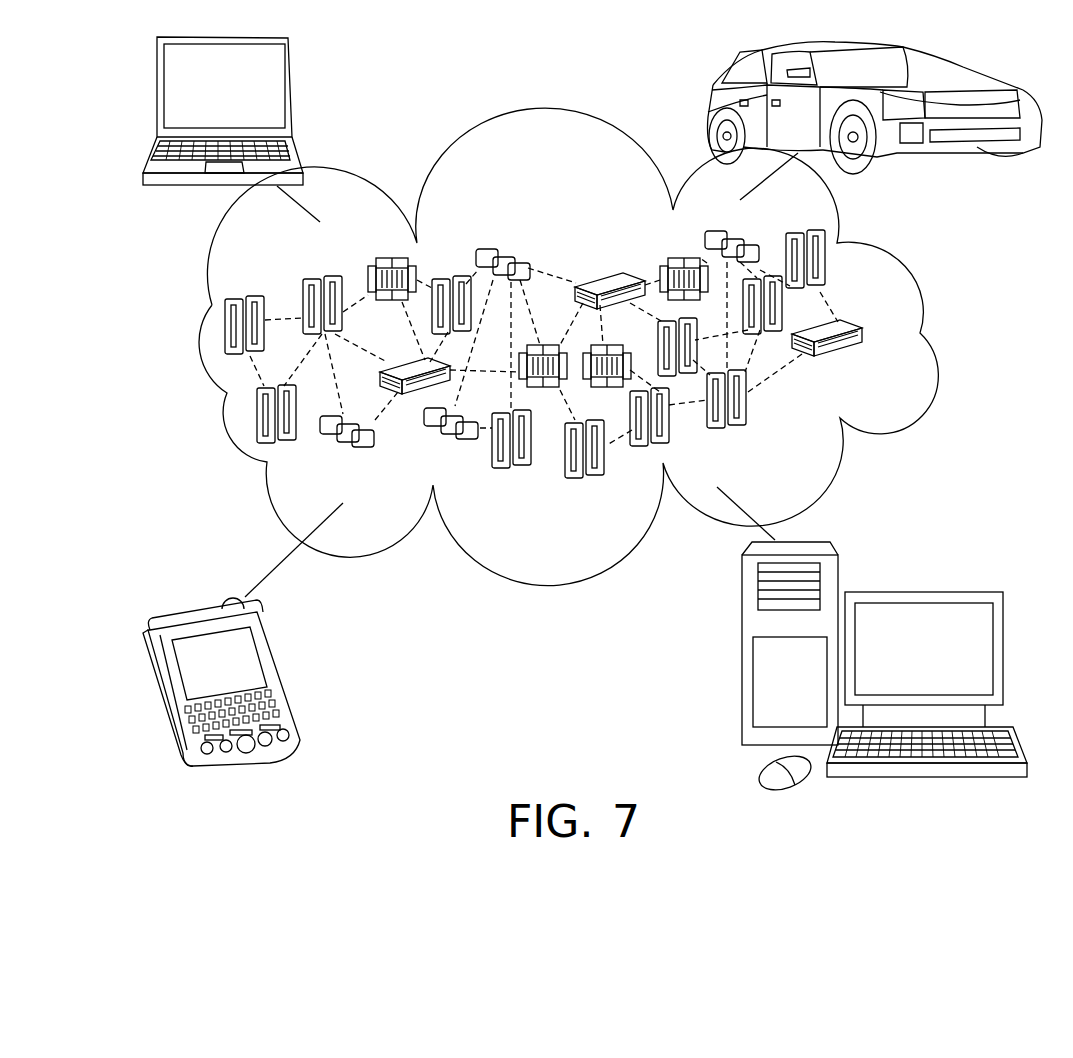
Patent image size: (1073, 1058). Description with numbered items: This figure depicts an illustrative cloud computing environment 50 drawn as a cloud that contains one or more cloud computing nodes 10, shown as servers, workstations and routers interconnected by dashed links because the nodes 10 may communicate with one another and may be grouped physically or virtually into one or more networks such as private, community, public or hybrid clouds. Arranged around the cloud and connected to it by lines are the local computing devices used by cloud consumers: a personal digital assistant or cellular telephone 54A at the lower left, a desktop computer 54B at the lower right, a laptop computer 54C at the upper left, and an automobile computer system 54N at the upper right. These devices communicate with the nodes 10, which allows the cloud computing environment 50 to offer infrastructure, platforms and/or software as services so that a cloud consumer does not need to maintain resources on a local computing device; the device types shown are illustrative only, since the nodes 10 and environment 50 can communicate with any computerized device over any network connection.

The cloud computing environment 50 is at (922, 337).
The cloud computing nodes 10 is at (878, 362).
The personal digital assistant (PDA) or cellular telephone 54A is at (282, 675).
The desktop computer 54B is at (920, 592).
The laptop computer 54C is at (292, 92).
The automobile computer system 54N is at (712, 110).